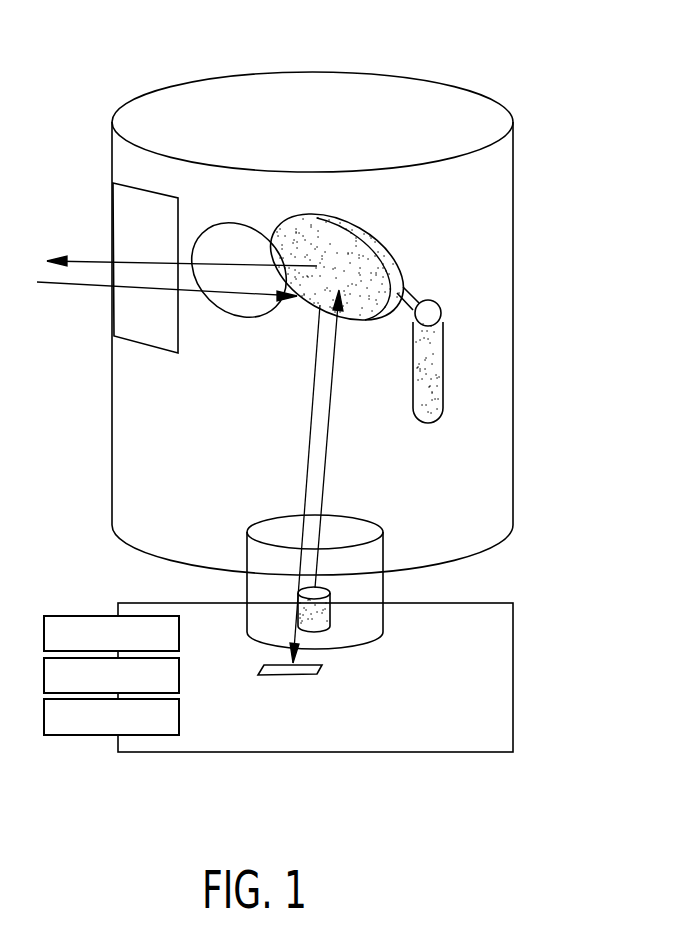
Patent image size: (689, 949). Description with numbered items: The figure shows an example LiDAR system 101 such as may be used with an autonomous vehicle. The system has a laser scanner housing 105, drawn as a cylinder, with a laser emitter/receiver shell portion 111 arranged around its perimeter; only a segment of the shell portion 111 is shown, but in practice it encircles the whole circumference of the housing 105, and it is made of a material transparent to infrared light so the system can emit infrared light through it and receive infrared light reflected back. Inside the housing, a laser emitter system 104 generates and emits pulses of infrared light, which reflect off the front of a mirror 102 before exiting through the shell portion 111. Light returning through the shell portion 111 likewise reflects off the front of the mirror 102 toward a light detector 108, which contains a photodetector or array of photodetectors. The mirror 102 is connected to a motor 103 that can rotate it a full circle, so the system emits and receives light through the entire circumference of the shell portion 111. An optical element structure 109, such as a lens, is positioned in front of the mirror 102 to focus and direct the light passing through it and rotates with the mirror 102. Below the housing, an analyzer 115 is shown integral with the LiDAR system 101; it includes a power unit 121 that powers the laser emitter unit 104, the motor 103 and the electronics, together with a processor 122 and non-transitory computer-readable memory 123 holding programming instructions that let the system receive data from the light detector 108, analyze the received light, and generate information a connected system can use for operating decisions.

The LiDAR system 101 is at (112, 95).
The mirror 102 is at (393, 253).
The motor 103 is at (444, 352).
The laser emitter system 104 is at (331, 610).
The laser scanner housing 105 is at (513, 267).
The light detector 108 is at (318, 672).
The optical element structure 109 is at (238, 222).
The laser emitter/receiver shell portion 111 is at (112, 236).
The analyzer 115 is at (513, 684).
The power unit 121 is at (111, 634).
The processor 122 is at (111, 676).
The non-transitory computer-readable memory 123 is at (111, 717).